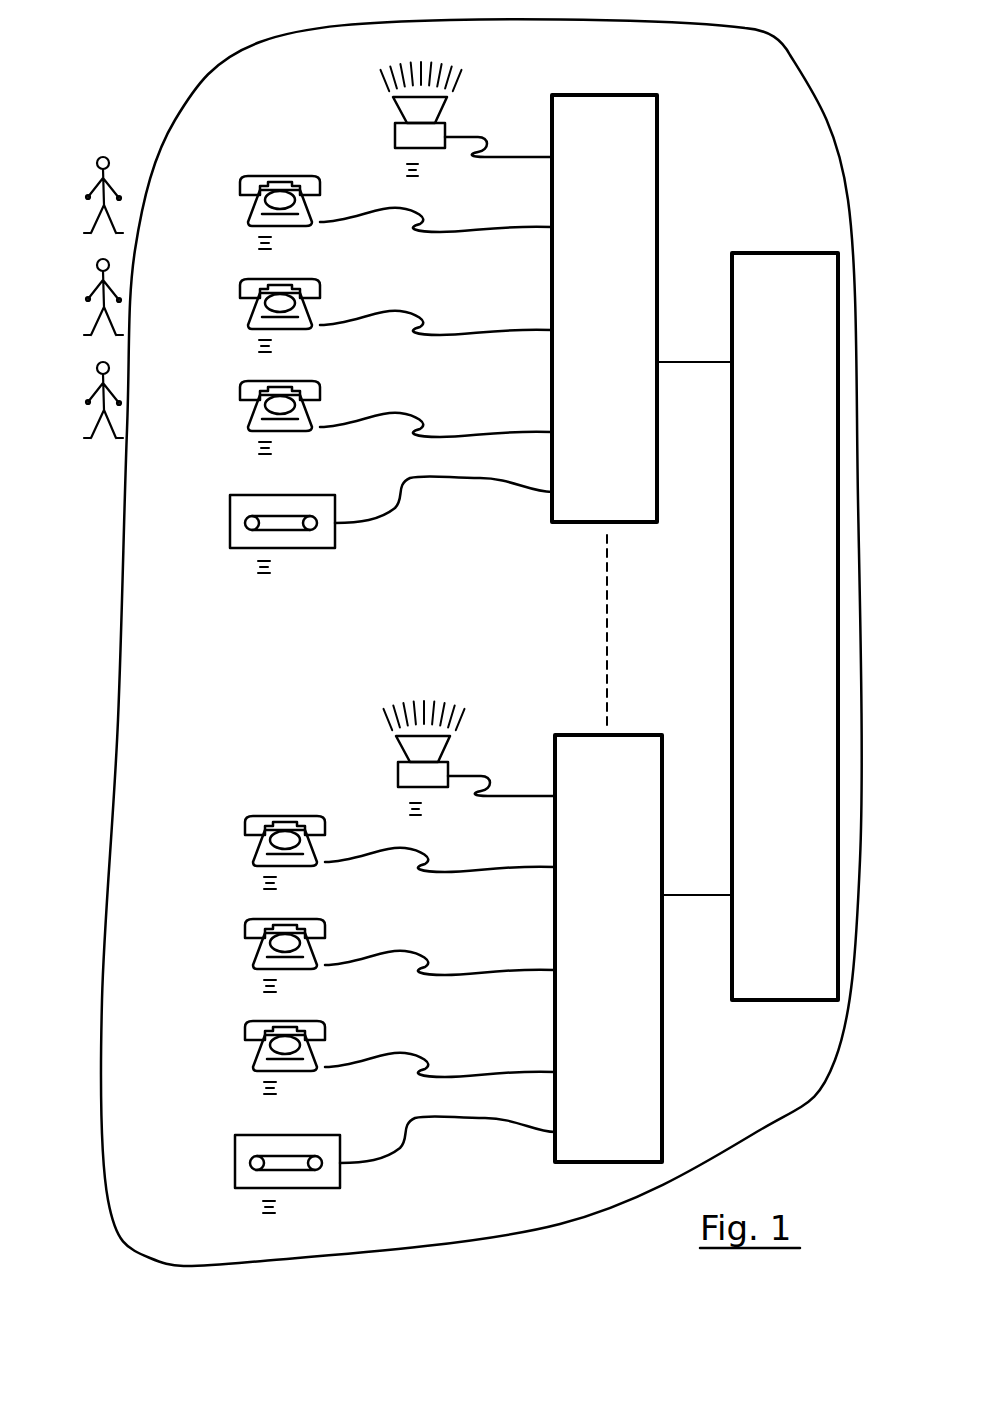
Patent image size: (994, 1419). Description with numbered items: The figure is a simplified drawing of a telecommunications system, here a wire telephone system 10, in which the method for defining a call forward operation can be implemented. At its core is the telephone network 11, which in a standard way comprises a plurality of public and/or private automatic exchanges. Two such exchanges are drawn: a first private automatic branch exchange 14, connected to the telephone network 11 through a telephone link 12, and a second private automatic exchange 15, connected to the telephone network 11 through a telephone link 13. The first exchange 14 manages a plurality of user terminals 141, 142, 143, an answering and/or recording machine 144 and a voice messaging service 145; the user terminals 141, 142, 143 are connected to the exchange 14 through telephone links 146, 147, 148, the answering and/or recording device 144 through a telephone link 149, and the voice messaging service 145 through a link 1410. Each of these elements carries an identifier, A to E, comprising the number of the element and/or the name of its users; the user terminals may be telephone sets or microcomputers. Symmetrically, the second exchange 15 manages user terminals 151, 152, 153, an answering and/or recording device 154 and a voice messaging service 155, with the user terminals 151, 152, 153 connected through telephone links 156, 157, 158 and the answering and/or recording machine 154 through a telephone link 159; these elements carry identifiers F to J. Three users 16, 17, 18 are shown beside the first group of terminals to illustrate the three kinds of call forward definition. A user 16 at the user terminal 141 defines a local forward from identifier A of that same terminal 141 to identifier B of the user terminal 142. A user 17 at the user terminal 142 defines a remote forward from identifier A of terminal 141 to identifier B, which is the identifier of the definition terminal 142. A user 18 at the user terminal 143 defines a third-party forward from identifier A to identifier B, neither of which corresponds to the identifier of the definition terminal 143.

The wire telephone system 10 is at (843, 148).
The telephone network 11 is at (732, 614).
The telephone link 12 is at (688, 362).
The telephone link 13 is at (688, 895).
The first private automatic branch exchange 14 is at (657, 175).
The second private automatic exchange 15 is at (662, 1065).
The user 16 is at (97, 186).
The user 17 is at (97, 296).
The user 18 is at (97, 400).
The user terminal 141 is at (238, 210).
The user terminal 142 is at (238, 313).
The user terminal 143 is at (238, 415).
The answering and/or recording machine 144 is at (230, 514).
The voice messaging service 145 is at (395, 133).
The telephone link 146 is at (440, 232).
The telephone link 147 is at (440, 335).
The telephone link 148 is at (440, 437).
The telephone link 149 is at (425, 480).
The link 1410 is at (478, 140).
The user terminal 151 is at (243, 850).
The user terminal 152 is at (243, 953).
The user terminal 153 is at (243, 1055).
The answering and/or recording device 154 is at (235, 1154).
The voice messaging service 155 is at (398, 772).
The telephone link 156 is at (445, 872).
The telephone link 157 is at (445, 975).
The telephone link 158 is at (445, 1077).
The telephone link 159 is at (430, 1118).